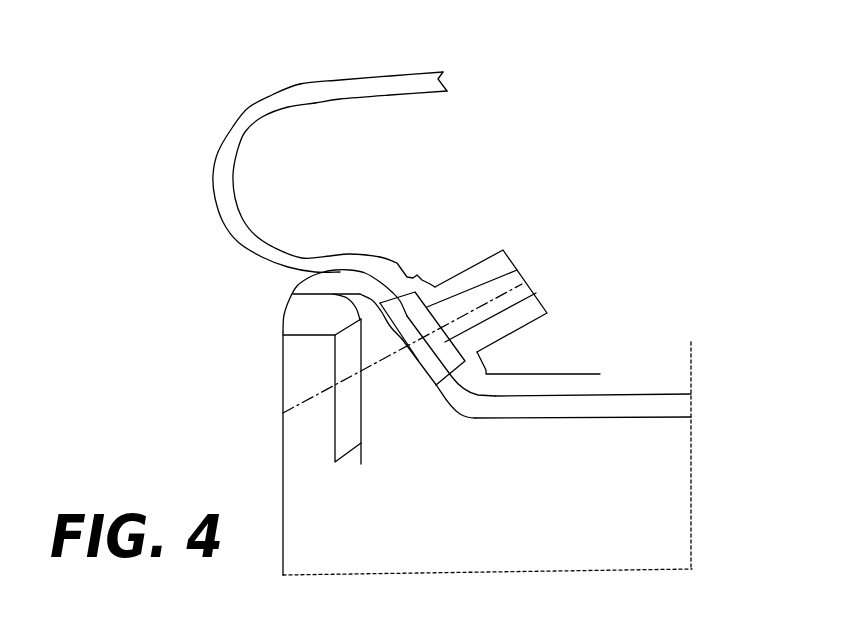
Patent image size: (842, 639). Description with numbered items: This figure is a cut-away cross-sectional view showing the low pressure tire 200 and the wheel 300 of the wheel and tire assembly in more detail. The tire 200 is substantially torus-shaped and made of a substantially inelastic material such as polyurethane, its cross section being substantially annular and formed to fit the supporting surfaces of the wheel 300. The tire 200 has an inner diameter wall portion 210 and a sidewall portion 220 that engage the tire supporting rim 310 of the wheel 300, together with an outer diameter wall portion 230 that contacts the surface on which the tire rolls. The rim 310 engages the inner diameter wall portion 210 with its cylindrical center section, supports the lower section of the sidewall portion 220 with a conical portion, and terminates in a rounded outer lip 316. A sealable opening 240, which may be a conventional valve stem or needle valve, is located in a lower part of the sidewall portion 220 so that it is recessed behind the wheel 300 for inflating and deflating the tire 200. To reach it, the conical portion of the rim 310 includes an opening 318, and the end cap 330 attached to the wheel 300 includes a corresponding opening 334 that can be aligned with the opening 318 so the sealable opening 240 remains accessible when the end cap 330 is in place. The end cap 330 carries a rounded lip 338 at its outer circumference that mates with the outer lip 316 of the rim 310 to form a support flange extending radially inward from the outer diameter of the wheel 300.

The low pressure tire 200 is at (356, 186).
The inner diameter wall portion 210 is at (567, 388).
The sidewall portion 220 is at (393, 267).
The outer diameter wall portion 230 is at (390, 76).
The sealable opening 240 is at (517, 270).
The wheel 300 is at (597, 468).
The tire supporting rim 310 is at (658, 418).
The rounded outer lip 316 is at (308, 281).
The opening 318 is at (423, 360).
The end cap 330 is at (324, 431).
The opening 334 is at (333, 358).
The rounded lip 338 is at (282, 322).